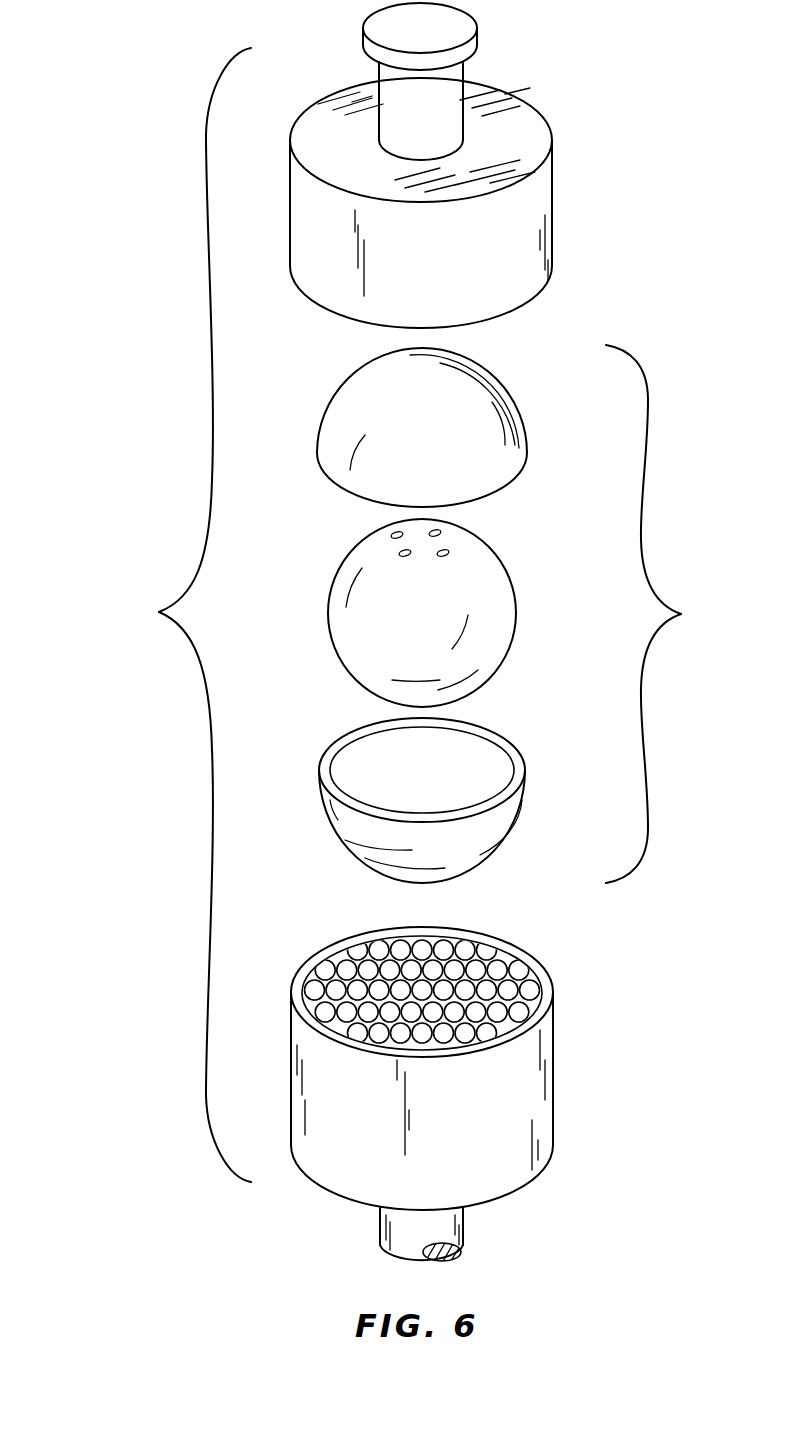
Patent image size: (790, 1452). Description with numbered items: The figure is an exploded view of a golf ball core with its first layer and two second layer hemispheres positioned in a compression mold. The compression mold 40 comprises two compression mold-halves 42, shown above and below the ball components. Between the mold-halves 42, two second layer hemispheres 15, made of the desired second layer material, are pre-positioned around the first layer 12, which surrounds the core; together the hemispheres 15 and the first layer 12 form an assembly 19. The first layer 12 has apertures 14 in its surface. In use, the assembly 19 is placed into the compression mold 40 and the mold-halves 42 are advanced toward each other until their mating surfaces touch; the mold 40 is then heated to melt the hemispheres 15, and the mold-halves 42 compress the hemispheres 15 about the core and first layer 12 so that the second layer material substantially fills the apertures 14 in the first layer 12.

The compression mold 40 is at (163, 485).
The compression mold-halves 42 is at (553, 208).
The second layer hemispheres 15 is at (525, 436).
The first layer 12 is at (501, 640).
The apertures 14 is at (449, 552).
The assembly 19 is at (661, 614).